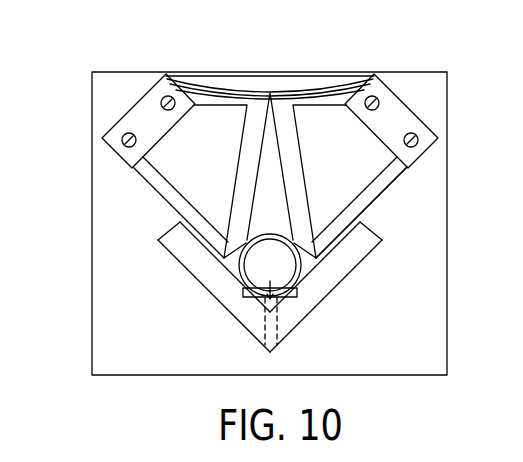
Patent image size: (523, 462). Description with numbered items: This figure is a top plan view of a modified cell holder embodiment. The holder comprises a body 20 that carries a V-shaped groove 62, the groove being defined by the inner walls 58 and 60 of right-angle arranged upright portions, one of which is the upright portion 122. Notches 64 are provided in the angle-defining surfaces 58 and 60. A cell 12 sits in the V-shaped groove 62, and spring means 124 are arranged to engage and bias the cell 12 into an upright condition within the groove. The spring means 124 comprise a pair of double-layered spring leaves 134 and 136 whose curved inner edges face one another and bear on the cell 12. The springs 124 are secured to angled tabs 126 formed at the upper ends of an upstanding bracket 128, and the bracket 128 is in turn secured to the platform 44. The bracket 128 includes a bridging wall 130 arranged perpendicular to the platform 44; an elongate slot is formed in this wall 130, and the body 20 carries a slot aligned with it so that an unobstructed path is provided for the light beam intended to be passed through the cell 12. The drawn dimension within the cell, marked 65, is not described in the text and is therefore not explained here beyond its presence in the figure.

The platform 44 is at (430, 362).
The bridging wall 130 is at (283, 43).
The angled tabs 126 is at (142, 118).
The double-layered spring leaf 134 is at (183, 163).
The spring means 124 is at (364, 187).
The double-layered spring leaf 136 is at (370, 198).
The inner wall 58 is at (345, 226).
The upstanding bracket 128 is at (276, 188).
The inner wall 60 is at (207, 232).
The upright portion 122 is at (338, 276).
The body 20 is at (302, 326).
The cell 12 is at (267, 234).
The pipe diameter 65 is at (279, 253).
The V-shaped groove 62 is at (300, 292).
The notches 64 is at (243, 307).